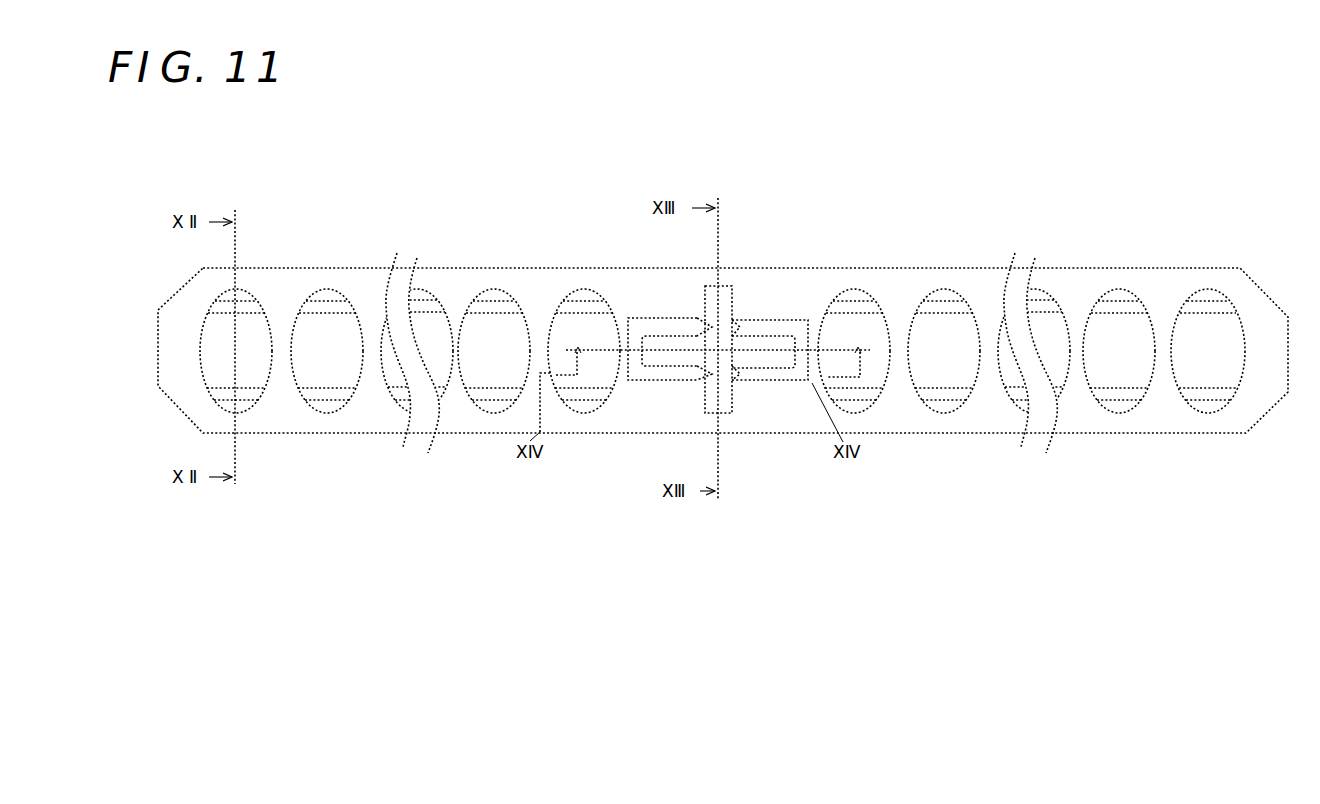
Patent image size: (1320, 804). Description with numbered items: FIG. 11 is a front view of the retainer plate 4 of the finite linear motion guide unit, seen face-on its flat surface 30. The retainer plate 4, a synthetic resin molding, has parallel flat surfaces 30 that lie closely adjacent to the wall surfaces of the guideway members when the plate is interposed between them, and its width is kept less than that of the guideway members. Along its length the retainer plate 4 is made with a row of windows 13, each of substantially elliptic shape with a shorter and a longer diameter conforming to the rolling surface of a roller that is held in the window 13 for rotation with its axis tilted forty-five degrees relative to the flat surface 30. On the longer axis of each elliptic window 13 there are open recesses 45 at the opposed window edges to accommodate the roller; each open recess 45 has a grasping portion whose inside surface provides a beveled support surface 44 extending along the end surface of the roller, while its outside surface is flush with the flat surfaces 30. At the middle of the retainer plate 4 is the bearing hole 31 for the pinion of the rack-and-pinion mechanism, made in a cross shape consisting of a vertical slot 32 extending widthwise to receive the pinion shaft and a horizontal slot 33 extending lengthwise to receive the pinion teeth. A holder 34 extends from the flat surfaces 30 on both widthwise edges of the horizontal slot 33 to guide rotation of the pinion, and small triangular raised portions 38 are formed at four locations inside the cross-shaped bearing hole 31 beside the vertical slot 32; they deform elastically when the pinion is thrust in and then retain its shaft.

The retainer plate 4 is at (892, 252).
The window 13 is at (567, 323).
The flat surface 30 is at (447, 268).
The bearing hole 31 is at (762, 380).
The vertical slot 32 is at (734, 286).
The horizontal slot 33 is at (663, 342).
The holder 34 is at (760, 320).
The raised portion 38 is at (708, 326).
The beveled support surface 44 is at (485, 393).
The open recess 45 is at (324, 292).